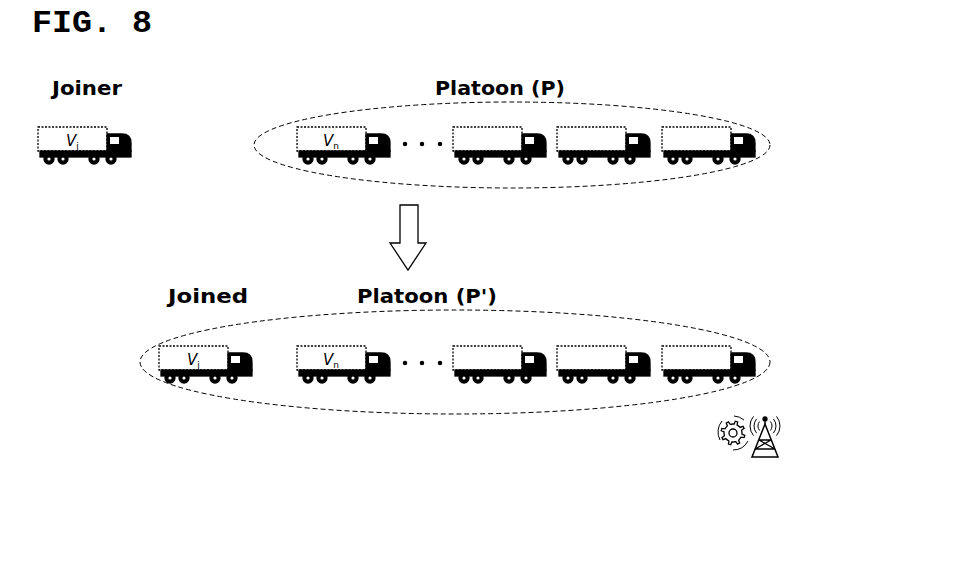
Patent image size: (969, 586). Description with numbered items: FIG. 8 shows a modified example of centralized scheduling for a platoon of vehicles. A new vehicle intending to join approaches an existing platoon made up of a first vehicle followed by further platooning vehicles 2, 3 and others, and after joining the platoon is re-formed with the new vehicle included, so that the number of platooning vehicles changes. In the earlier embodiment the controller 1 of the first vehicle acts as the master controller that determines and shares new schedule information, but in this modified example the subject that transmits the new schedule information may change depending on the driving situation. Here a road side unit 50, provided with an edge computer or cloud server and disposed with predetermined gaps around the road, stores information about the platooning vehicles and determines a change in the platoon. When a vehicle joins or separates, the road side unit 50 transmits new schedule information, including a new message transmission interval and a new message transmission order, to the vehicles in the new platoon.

The road side unit 50 is at (780, 447).
The controller 1 is at (708, 255).
The vehicle V2 2 is at (603, 255).
The vehicle V3 3 is at (499, 255).